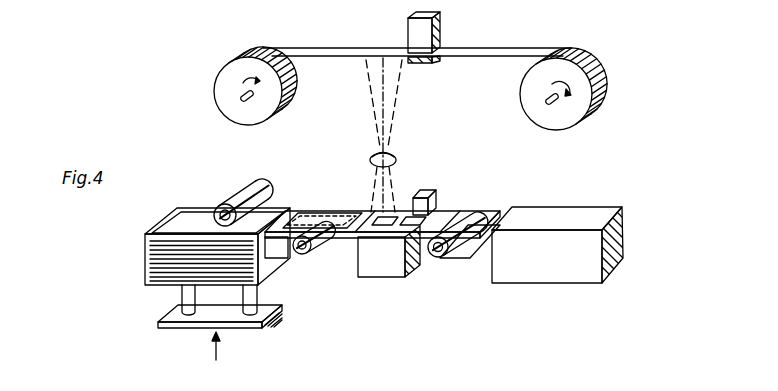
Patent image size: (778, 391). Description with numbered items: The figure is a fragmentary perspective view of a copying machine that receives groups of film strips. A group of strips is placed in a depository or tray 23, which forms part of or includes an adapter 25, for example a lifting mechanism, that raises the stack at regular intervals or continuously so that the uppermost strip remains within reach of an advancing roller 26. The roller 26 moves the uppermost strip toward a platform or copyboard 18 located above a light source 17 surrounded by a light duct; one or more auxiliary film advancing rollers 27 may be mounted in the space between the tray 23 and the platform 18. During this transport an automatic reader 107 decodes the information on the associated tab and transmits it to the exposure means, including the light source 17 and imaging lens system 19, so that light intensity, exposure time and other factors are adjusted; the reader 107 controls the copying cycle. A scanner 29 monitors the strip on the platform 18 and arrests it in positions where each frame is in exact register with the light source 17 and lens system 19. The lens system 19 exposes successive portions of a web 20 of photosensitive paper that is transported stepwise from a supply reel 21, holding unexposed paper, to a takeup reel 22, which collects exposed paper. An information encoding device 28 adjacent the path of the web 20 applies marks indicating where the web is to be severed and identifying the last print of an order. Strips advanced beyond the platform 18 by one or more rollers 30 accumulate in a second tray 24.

The light source 17 is at (383, 270).
The platform 18 is at (397, 211).
The imaging lens system 19 is at (395, 157).
The web 20 is at (374, 52).
The supply reel 21 is at (215, 105).
The takeup reel 22 is at (596, 116).
The tray 23 is at (272, 268).
The second tray 24 is at (590, 274).
The adapter 25 is at (170, 305).
The advancing roller 26 is at (234, 205).
The auxiliary film advancing roller 27 is at (302, 255).
The information encoding device 28 is at (438, 36).
The scanner 29 is at (431, 199).
The roller 30 is at (445, 257).
The automatic reader 107 is at (301, 212).